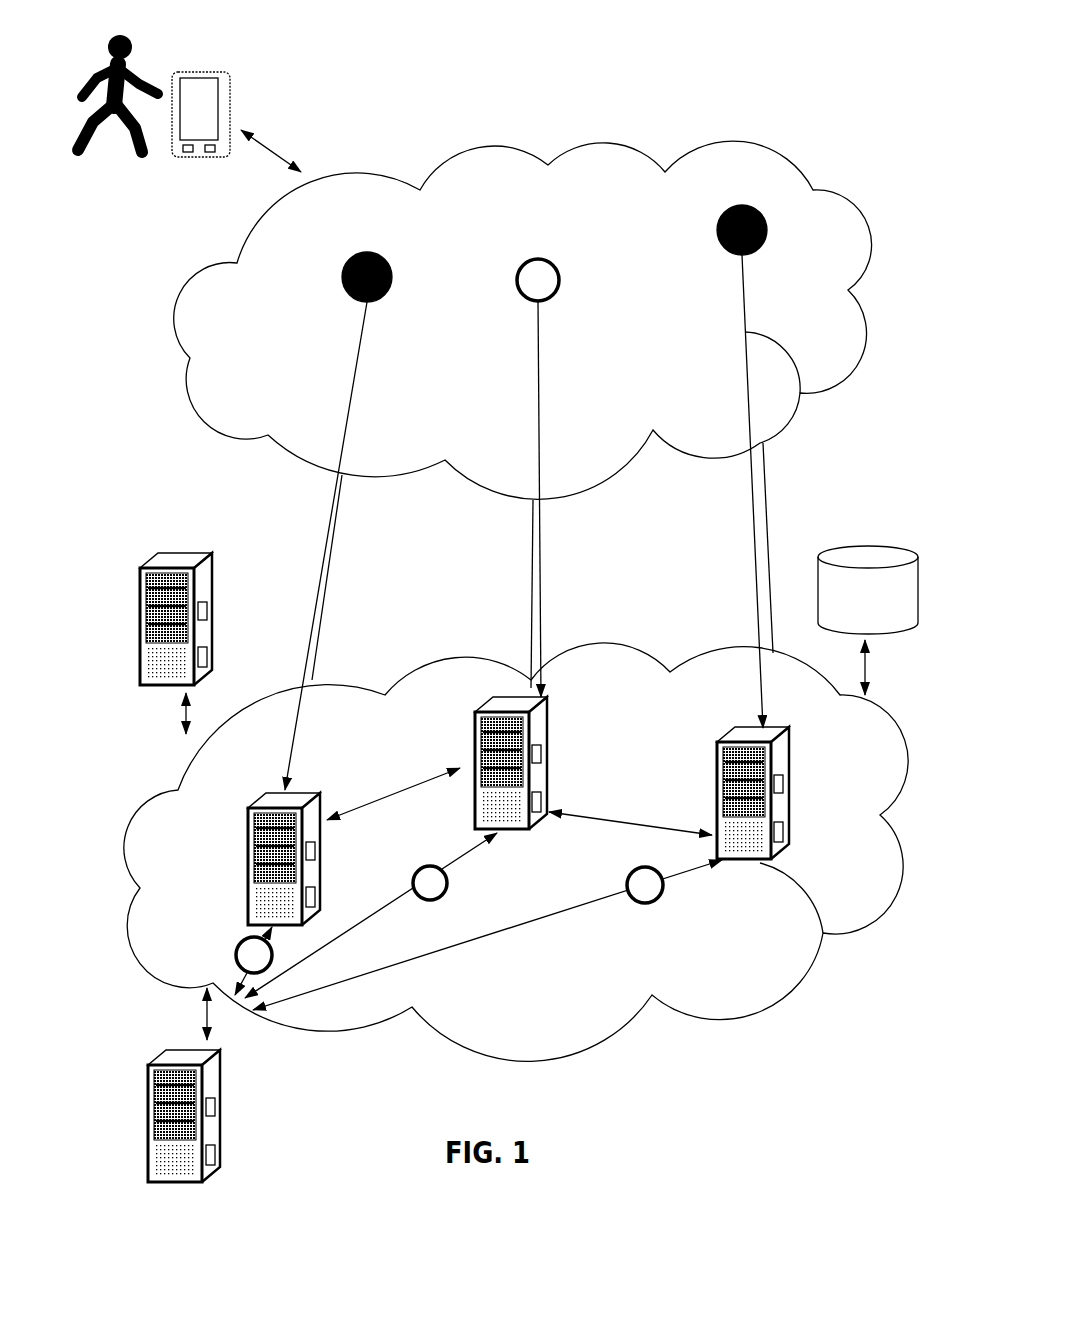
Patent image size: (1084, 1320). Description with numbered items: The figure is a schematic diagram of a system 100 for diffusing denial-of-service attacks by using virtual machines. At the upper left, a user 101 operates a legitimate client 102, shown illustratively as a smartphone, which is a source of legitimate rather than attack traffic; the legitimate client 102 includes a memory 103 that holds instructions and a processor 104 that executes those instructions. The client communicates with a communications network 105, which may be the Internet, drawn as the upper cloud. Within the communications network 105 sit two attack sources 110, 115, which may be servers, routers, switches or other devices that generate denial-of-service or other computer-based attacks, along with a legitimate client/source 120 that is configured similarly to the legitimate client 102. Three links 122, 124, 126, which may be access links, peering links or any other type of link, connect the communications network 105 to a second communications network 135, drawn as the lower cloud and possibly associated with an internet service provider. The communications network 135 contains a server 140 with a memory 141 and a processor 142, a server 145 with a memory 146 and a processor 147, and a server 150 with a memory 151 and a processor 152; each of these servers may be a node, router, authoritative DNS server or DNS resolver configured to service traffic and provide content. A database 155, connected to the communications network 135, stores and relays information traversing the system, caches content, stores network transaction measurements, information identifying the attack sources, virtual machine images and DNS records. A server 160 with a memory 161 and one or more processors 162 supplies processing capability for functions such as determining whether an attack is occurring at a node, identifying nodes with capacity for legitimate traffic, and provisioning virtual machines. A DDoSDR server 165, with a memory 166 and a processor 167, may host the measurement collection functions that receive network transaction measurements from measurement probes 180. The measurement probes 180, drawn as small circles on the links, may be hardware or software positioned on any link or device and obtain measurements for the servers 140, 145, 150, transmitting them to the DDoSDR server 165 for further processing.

The system 100 is at (672, 1046).
The user 101 is at (142, 158).
The legitimate client 102 is at (232, 107).
The memory 103 is at (188, 152).
The processor 104 is at (210, 152).
The communications network 105 is at (212, 353).
The attack source 110 is at (342, 280).
The attack source 115 is at (718, 240).
The legitimate client/source 120 is at (518, 291).
The link 122 is at (333, 572).
The link 124 is at (770, 477).
The link 126 is at (528, 585).
The communications network 135 is at (178, 778).
The server 140 is at (475, 735).
The memory 141 is at (541, 755).
The processor 142 is at (541, 800).
The server 145 is at (247, 832).
The memory 146 is at (315, 851).
The processor 147 is at (315, 896).
The server 150 is at (792, 750).
The memory 151 is at (783, 783).
The processor 152 is at (783, 830).
The database 155 is at (868, 590).
The server 160 is at (140, 593).
The memory 161 is at (207, 655).
The processor 162 is at (207, 611).
The DDoSDR server 165 is at (148, 1102).
The memory 166 is at (215, 1108).
The processor 167 is at (215, 1153).
The measurement probe 180 is at (236, 953).